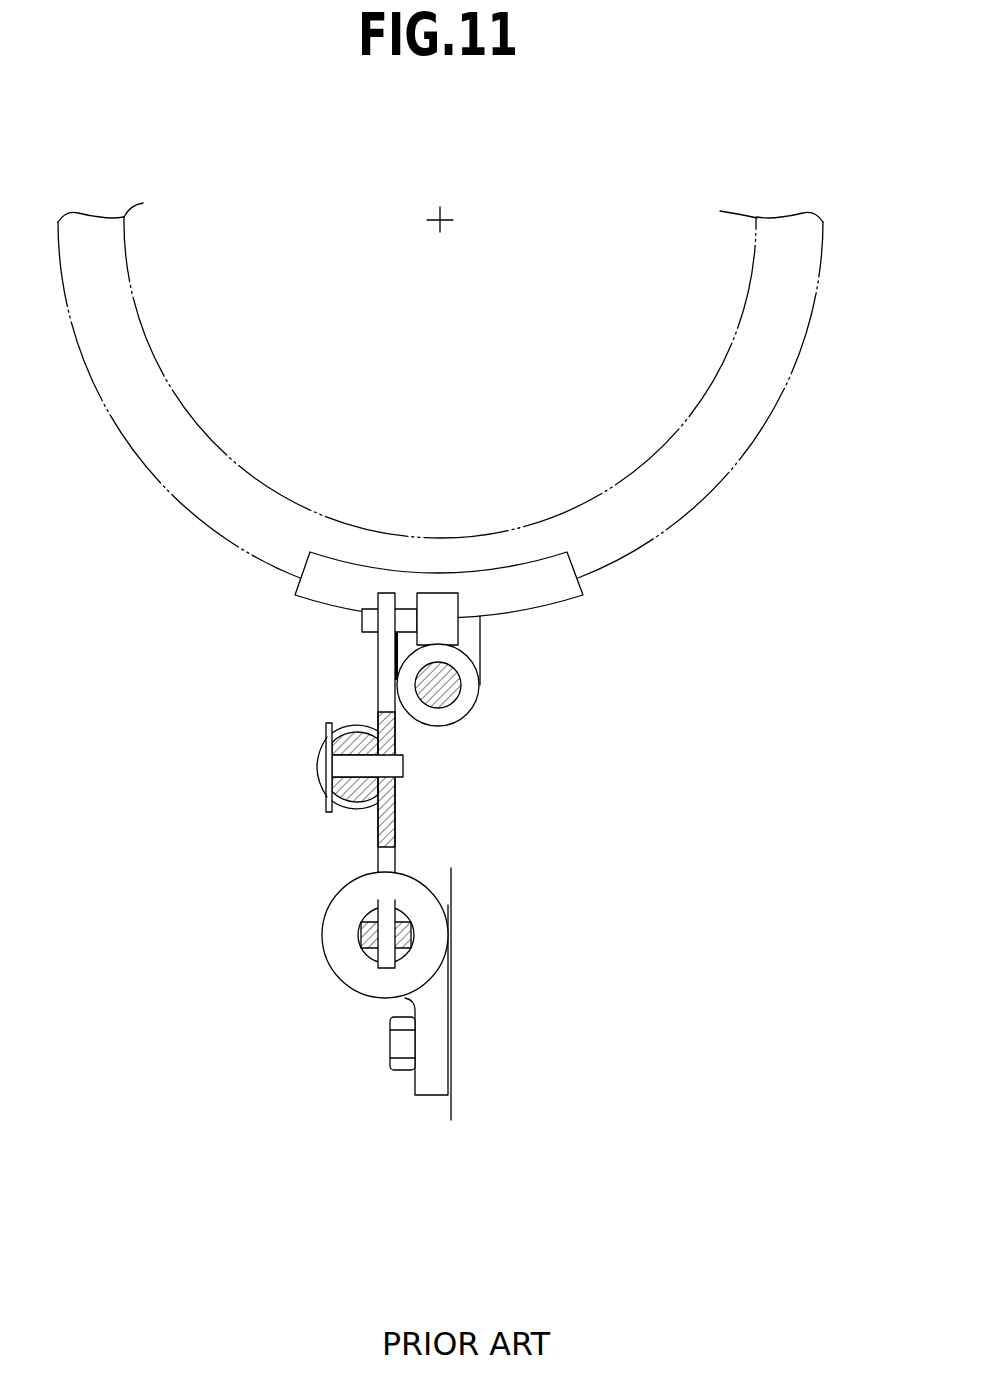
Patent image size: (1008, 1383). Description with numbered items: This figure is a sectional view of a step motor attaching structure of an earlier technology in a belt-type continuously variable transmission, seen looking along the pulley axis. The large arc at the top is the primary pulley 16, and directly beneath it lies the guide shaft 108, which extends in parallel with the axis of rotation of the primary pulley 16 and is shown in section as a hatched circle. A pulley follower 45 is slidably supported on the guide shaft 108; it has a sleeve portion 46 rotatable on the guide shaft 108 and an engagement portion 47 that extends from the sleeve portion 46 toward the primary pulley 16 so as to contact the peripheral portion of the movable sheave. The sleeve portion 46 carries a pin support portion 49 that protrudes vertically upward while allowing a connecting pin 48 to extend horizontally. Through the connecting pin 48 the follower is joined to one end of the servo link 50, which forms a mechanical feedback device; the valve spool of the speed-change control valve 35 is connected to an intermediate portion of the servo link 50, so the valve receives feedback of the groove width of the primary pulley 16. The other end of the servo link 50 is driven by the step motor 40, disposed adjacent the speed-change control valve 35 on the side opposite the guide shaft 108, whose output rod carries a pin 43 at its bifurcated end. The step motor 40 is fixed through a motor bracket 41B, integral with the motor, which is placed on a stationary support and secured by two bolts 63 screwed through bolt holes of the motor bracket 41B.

The primary pulley 16 is at (762, 427).
The pulley follower 45 is at (280, 595).
The engagement portion 47 is at (552, 596).
The connecting pin 48 is at (360, 624).
The pin support portion 49 is at (447, 628).
The sleeve portion 46 is at (468, 716).
The guide shaft 108 is at (460, 687).
The servo link 50 is at (395, 805).
The speed-change control valve 35 is at (358, 812).
The step motor 40 is at (340, 905).
The pin 43 is at (357, 938).
The bolts 63 is at (390, 1047).
The motor bracket 41B is at (433, 1077).